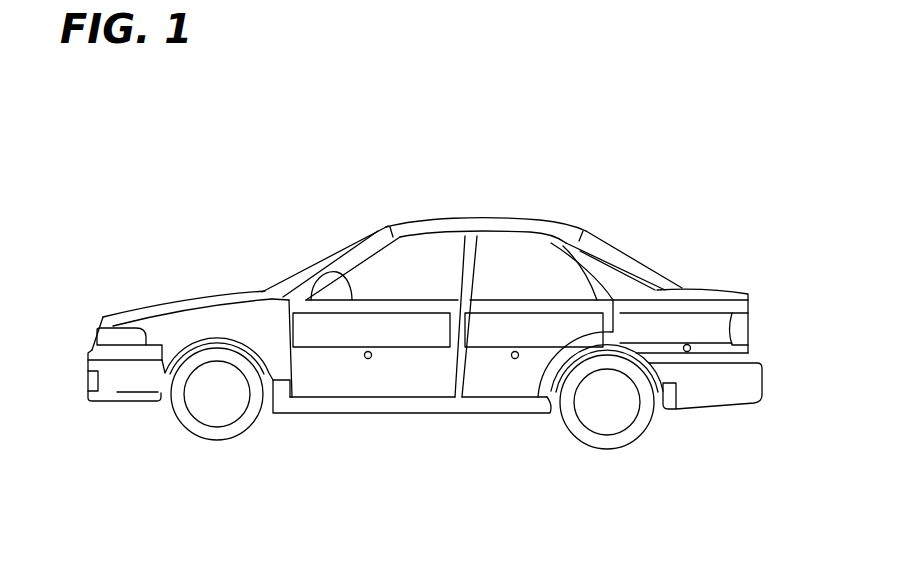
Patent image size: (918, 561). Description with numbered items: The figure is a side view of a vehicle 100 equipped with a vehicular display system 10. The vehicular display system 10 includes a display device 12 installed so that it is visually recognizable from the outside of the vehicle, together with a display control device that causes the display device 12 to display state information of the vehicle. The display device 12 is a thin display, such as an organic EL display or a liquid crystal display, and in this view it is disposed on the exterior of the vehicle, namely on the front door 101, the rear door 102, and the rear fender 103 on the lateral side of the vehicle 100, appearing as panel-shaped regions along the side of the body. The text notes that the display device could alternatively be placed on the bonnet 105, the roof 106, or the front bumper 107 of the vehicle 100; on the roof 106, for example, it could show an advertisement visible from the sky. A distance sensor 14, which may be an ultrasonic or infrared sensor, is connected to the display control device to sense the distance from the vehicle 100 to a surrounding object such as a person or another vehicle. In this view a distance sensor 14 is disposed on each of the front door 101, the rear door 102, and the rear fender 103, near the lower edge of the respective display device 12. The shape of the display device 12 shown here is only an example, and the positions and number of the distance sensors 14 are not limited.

The vehicle 100 is at (213, 238).
The vehicular display system 10 is at (352, 479).
The display device 12 is at (322, 350).
The distance sensor 14 is at (368, 359).
The front door 101 is at (413, 377).
The rear door 102 is at (480, 382).
The rear fender 103 is at (750, 309).
The bonnet 105 is at (176, 292).
The roof 106 is at (460, 218).
The front bumper 107 is at (86, 365).